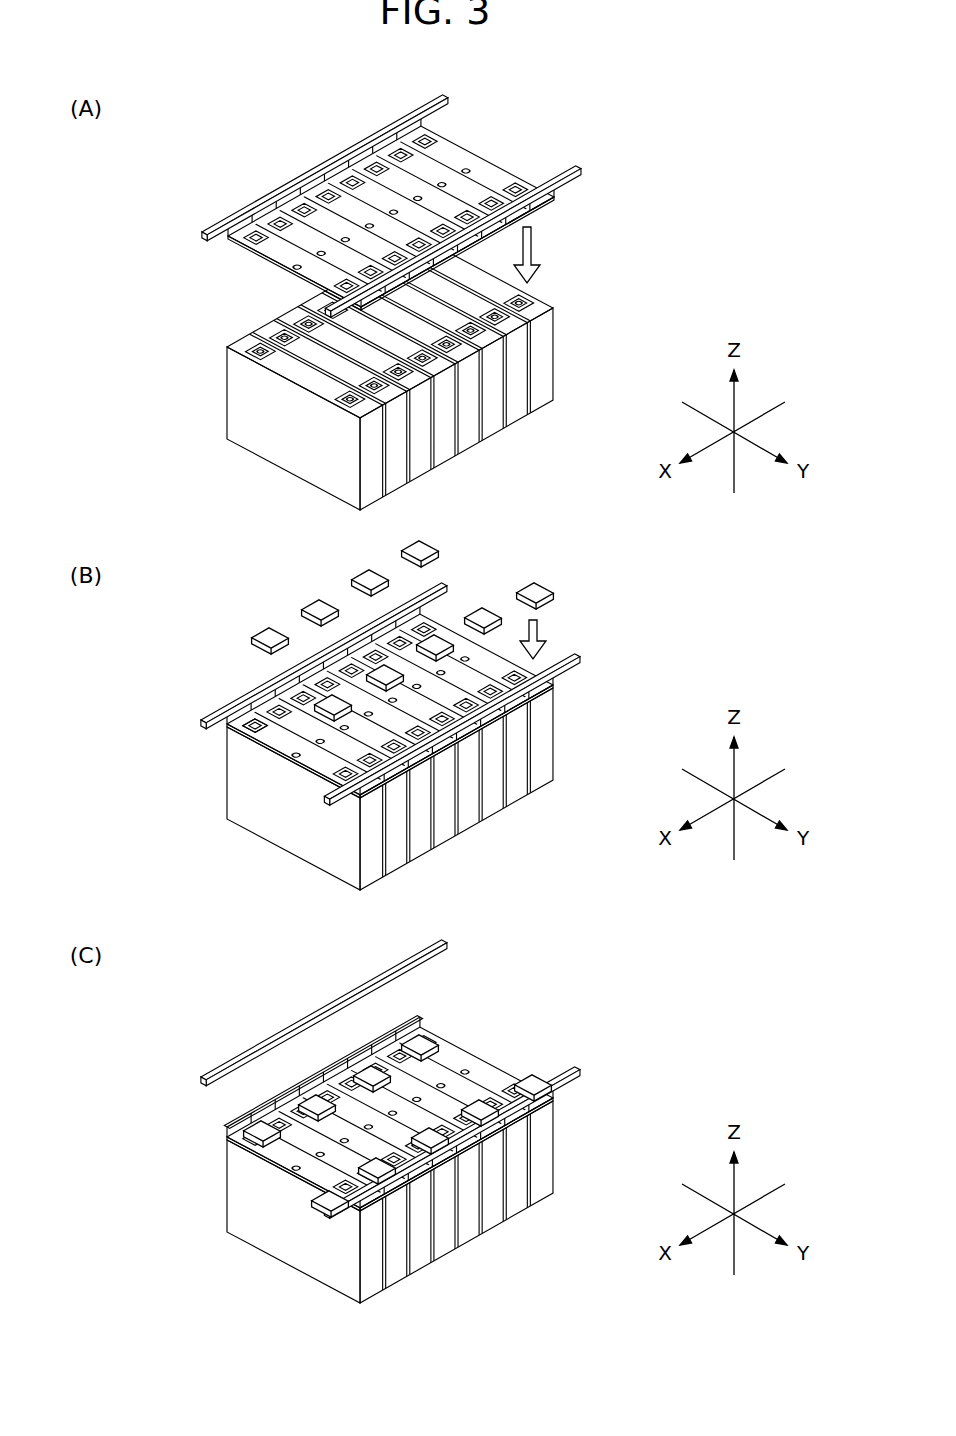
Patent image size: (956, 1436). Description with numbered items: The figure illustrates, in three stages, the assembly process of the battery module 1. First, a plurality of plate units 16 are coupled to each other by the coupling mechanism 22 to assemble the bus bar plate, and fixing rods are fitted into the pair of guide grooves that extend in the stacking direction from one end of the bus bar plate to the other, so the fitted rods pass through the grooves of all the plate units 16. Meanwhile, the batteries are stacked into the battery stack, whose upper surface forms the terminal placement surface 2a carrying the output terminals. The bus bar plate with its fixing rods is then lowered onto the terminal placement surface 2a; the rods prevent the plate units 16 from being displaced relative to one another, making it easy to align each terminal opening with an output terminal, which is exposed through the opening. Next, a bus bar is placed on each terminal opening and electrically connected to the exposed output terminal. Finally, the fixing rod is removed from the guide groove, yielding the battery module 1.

The battery module 1 is at (386, 1148).
The terminal placement surface 2a is at (552, 307).
The plate unit 16 is at (552, 220).
The coupling mechanism 22 is at (471, 163).